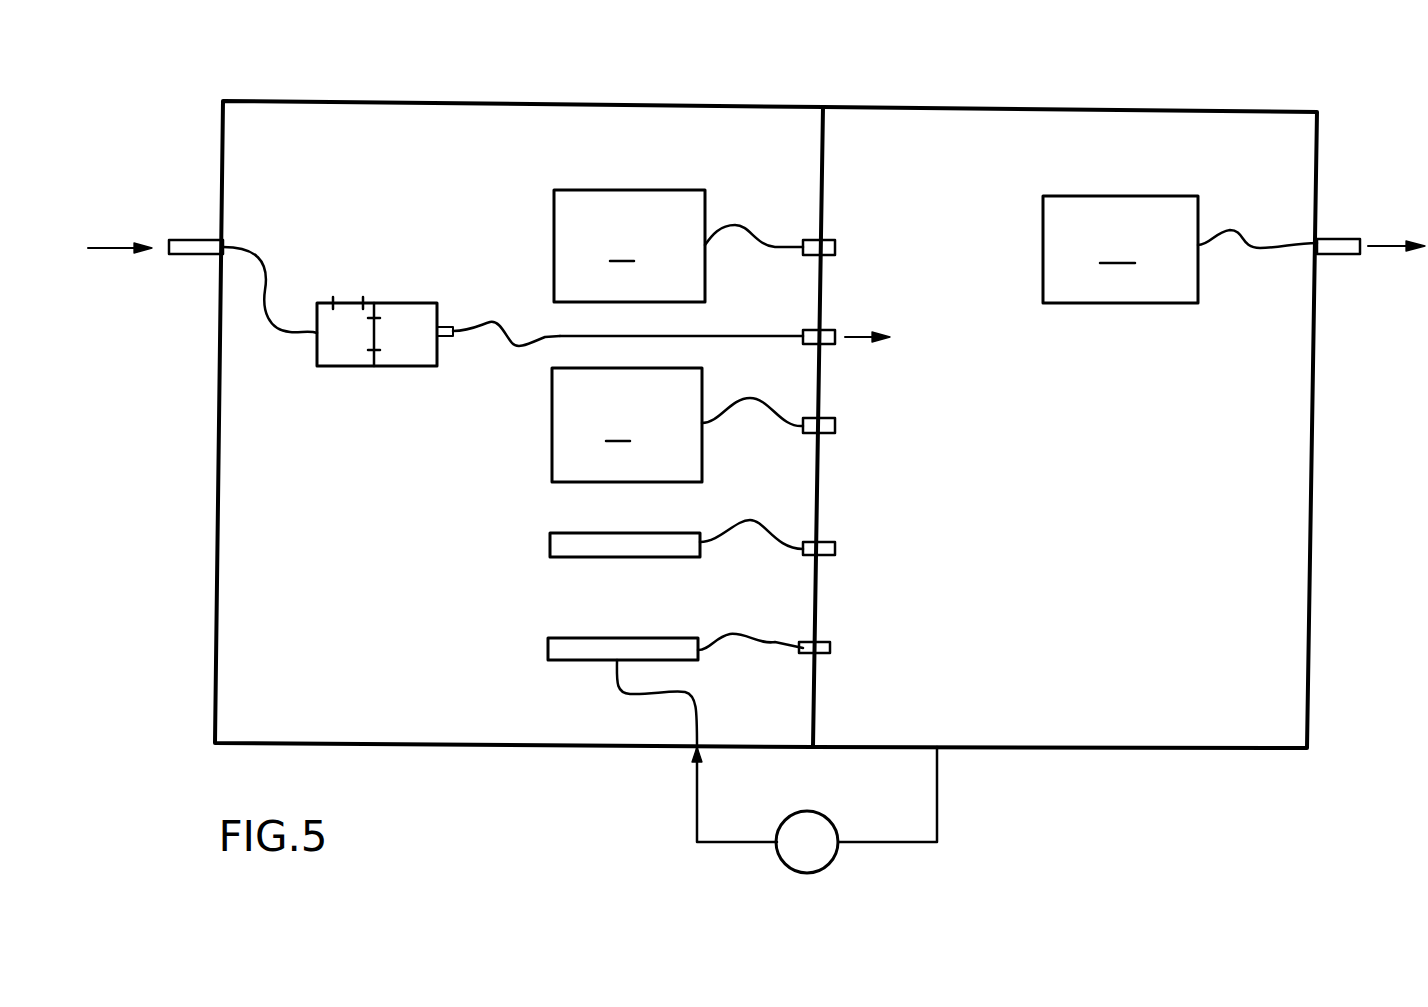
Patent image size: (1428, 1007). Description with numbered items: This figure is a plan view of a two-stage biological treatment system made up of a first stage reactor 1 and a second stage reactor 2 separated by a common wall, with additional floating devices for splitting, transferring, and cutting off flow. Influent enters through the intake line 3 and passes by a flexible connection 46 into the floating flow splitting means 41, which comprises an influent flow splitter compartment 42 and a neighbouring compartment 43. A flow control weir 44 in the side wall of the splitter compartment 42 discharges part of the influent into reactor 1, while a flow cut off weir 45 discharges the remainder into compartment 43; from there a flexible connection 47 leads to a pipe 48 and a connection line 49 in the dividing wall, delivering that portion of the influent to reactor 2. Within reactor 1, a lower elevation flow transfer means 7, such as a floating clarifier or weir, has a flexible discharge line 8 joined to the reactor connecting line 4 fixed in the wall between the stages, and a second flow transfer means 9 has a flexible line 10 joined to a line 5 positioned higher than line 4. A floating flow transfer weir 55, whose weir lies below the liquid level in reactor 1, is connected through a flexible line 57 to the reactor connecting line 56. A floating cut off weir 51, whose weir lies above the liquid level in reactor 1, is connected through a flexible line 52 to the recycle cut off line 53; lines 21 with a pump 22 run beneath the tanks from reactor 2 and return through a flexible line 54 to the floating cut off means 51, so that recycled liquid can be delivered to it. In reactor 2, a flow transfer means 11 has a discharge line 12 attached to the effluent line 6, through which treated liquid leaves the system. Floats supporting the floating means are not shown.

The first stage reactor 1 is at (565, 103).
The second stage reactor 2 is at (980, 108).
The intake line 3 is at (200, 238).
The reactor connecting line 4 is at (830, 247).
The reactor connecting line 5 is at (826, 428).
The effluent line 6 is at (1340, 240).
The lower elevation flow transfer means 7 is at (629, 246).
The discharge line 8 is at (728, 225).
The flow transfer means 9 is at (627, 425).
The flexible line 10 is at (763, 403).
The flow transfer means 11 is at (1120, 249).
The discharge line 12 is at (1243, 230).
The lines 21 is at (688, 800).
The pump 22 is at (830, 820).
The floating flow splitting means 41 is at (383, 343).
The influent flow splitter compartment 42 is at (355, 345).
The compartment 43 is at (408, 350).
The flow control weir 44 is at (348, 303).
The flow cut off weir 45 is at (378, 330).
The flexible connection 46 is at (240, 244).
The flexible connection 47 is at (490, 330).
The pipe 48 is at (712, 335).
The connection line 49 is at (830, 333).
The floating flow cut off means 51 is at (595, 660).
The flexible line 52 is at (725, 640).
The recycle cut off line 53 is at (826, 645).
The flexible line 54 is at (700, 730).
The floating flow transfer weir 55 is at (590, 563).
The reactor connecting line 56 is at (826, 548).
The flexible line 57 is at (735, 527).